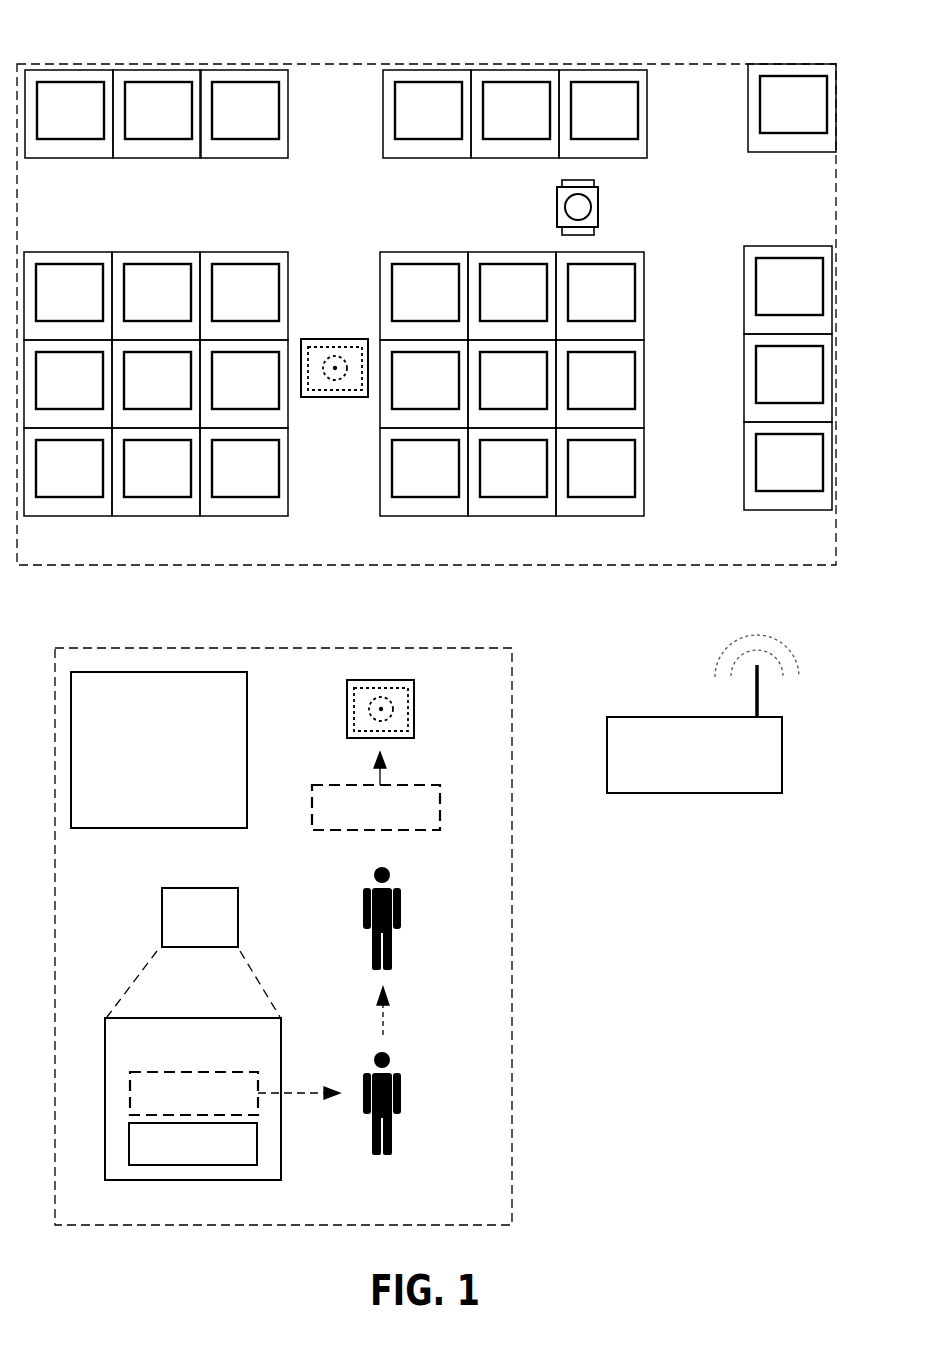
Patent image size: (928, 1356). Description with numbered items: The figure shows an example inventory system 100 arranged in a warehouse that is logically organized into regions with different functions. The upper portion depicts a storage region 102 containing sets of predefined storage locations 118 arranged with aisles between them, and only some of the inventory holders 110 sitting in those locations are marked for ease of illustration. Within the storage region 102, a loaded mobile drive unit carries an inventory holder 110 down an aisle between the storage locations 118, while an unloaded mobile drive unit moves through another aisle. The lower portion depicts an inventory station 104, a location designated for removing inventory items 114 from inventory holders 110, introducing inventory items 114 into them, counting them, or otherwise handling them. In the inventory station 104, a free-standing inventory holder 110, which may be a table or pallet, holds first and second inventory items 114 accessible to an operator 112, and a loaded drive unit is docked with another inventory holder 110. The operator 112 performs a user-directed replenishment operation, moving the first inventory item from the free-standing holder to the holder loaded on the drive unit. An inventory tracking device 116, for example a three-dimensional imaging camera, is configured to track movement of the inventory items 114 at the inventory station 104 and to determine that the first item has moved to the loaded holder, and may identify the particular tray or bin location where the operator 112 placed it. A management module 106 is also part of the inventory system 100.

The inventory system 100 is at (100, 46).
The storage region 102 is at (528, 555).
The inventory station 104 is at (395, 1215).
The management module 106 is at (652, 717).
The inventory holder 110 is at (139, 120).
The operator 112 is at (401, 898).
The inventory items 114 is at (107, 1017).
The inventory tracking device 116 is at (85, 672).
The predefined storage locations 118 is at (245, 158).